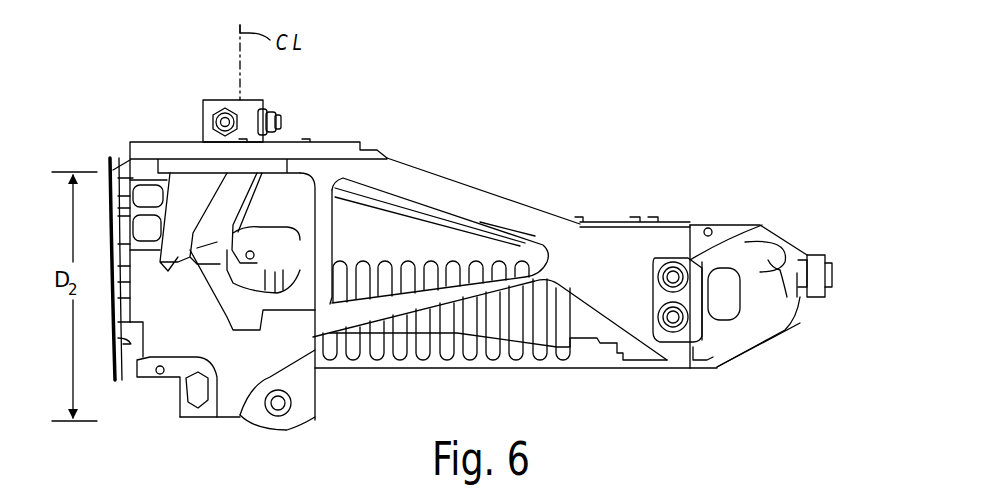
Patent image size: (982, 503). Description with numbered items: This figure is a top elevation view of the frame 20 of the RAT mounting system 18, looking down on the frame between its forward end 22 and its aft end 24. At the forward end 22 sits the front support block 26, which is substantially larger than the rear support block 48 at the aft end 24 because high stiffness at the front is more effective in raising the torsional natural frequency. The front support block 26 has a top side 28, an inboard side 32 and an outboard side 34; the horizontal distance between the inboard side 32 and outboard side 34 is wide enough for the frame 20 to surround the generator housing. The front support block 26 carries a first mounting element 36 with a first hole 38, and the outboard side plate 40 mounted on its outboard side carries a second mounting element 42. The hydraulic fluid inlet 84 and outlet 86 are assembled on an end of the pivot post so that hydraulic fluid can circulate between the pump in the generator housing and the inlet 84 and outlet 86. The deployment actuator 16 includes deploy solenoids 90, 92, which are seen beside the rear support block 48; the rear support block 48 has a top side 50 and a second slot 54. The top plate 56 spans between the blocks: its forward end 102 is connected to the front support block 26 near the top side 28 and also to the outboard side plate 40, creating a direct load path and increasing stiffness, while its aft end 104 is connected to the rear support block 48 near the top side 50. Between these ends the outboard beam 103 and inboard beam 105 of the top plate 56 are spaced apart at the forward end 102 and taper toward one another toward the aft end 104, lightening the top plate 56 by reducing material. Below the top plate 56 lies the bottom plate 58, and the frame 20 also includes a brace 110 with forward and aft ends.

The deployment actuator 16 is at (384, 262).
The RAT mounting system 18 is at (530, 78).
The frame 20 is at (683, 220).
The forward end 22 is at (127, 374).
The aft end 24 is at (834, 218).
The front support block 26 is at (185, 340).
The top side 28 is at (290, 200).
The inboard side 32 is at (230, 418).
The outboard side 34 is at (195, 173).
The first mounting element 36 is at (303, 386).
The first hole 38 is at (281, 410).
The outboard side plate 40 is at (360, 147).
The second mounting element 42 is at (284, 150).
The rear support block 48 is at (767, 305).
The top side 50 is at (738, 325).
The second slot 54 is at (797, 293).
The top plate 56 is at (434, 190).
The bottom plate 58 is at (583, 360).
The hydraulic fluid inlet 84 is at (223, 117).
The hydraulic fluid outlet 86 is at (281, 124).
The deploy solenoid 90 is at (673, 317).
The deploy solenoid 92 is at (675, 277).
The forward end 102 is at (357, 233).
The outboard beam 103 is at (512, 214).
The aft end 104 is at (645, 243).
The inboard beam 105 is at (390, 303).
The brace 110 is at (450, 207).